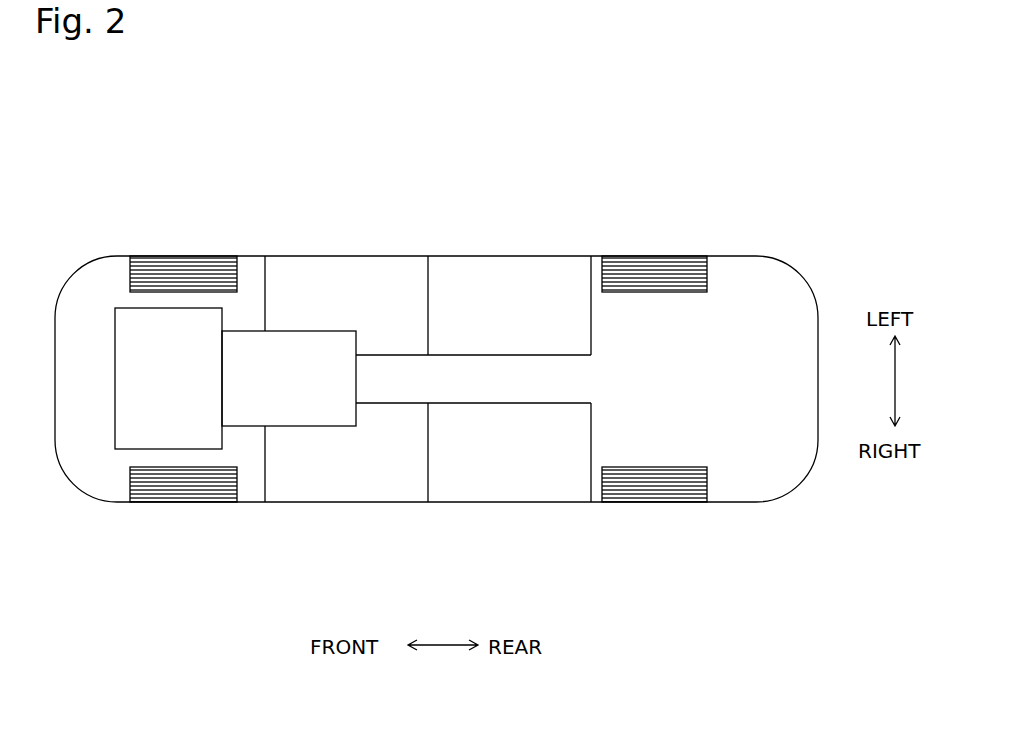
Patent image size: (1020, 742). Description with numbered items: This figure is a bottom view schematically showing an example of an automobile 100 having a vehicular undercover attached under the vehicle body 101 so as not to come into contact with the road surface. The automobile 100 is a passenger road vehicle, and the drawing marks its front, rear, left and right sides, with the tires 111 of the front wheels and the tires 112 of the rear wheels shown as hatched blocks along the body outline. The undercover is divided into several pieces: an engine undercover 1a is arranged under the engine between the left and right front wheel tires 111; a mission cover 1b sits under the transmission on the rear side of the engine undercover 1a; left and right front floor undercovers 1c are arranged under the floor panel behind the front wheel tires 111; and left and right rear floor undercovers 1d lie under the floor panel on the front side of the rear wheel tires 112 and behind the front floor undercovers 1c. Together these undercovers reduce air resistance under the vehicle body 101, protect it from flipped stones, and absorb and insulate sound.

The automobile 100 is at (436, 303).
The vehicle body 101 is at (747, 293).
The engine undercover 1a is at (115, 445).
The mission cover 1b is at (308, 331).
The front floor undercover 1c is at (373, 256).
The rear floor undercover 1d is at (512, 256).
The tires of the front wheels 111 is at (203, 256).
The tires of the rear wheels 112 is at (682, 256).